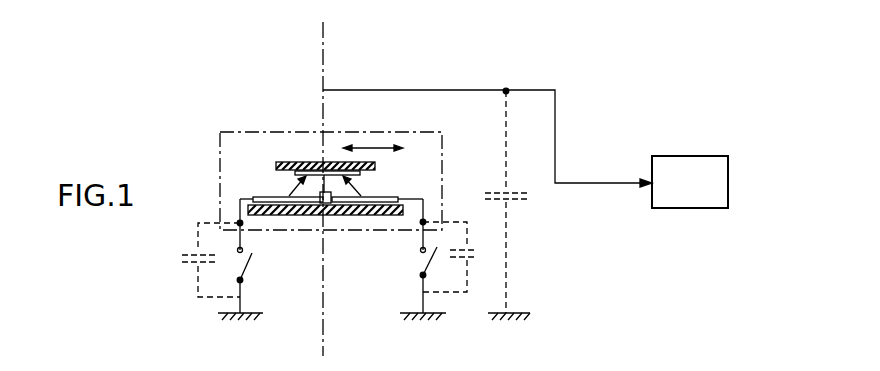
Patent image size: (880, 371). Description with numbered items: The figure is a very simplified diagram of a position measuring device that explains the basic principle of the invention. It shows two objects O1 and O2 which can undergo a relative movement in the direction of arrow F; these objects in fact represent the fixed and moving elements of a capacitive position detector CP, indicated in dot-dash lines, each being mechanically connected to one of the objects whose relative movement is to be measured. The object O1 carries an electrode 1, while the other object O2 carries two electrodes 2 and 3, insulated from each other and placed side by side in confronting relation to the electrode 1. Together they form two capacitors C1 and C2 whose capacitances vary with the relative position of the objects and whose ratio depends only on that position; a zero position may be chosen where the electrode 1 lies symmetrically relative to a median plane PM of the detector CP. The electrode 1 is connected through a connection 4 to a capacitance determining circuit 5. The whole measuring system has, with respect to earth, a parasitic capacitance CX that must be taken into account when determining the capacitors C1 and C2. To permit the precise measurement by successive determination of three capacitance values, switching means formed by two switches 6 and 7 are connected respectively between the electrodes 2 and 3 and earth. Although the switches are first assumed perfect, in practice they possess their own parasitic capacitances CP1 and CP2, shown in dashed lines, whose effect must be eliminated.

The electrode 1 is at (332, 162).
The electrode 2 is at (262, 197).
The electrode 3 is at (394, 197).
The connection 4 is at (536, 90).
The capacitance determining circuit 5 is at (687, 176).
The switch 6 is at (253, 254).
The switch 7 is at (429, 262).
The object O1 is at (290, 162).
The object O2 is at (308, 216).
The capacitor C1 is at (296, 192).
The capacitor C2 is at (354, 192).
The capacitive position detector CP is at (443, 152).
The arrow F is at (375, 148).
The median plane PM is at (323, 62).
The parasitic capacitance CX is at (517, 200).
The parasitic capacitance of switch CP1 is at (190, 262).
The parasitic capacitance of switch CP2 is at (478, 259).